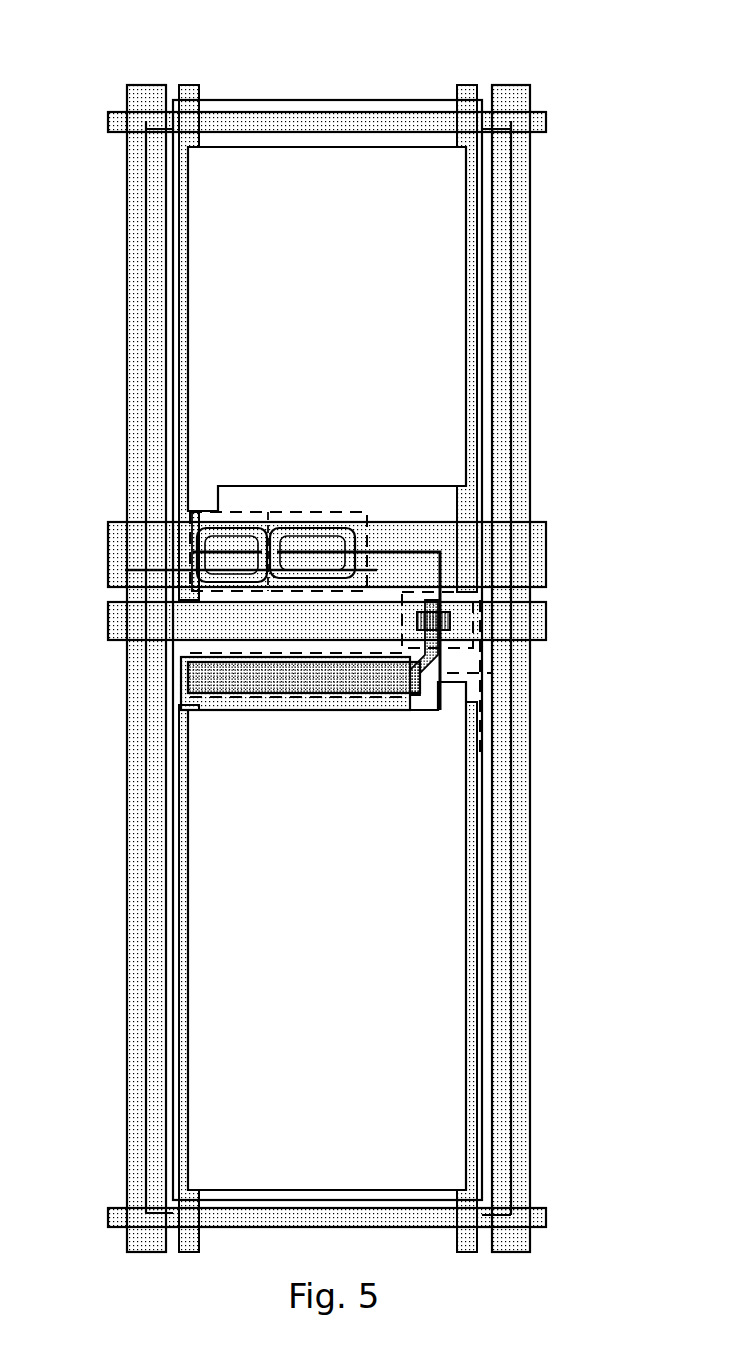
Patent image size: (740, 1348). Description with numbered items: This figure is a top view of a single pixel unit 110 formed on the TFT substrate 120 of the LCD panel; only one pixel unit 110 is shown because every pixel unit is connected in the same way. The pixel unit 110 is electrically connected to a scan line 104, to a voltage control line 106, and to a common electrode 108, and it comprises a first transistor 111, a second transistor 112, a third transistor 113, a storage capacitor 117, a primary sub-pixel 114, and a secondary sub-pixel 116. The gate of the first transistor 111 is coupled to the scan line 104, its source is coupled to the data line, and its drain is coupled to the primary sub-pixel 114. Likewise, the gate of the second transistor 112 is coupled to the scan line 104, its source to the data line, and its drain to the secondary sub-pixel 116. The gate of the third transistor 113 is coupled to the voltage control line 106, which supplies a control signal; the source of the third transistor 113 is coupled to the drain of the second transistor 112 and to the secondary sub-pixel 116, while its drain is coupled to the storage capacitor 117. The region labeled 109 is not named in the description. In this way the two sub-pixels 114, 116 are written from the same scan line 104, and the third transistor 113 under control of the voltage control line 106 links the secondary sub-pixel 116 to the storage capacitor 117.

The TFT substrate 120 is at (358, 29).
The scan line 104 is at (122, 540).
The voltage control line 106 is at (120, 634).
The common electrode 108 is at (190, 700).
The capacitor contact region 109 is at (222, 672).
The pixel unit 110 is at (176, 285).
The first transistor 111 is at (204, 504).
The second transistor 112 is at (372, 508).
The third transistor 113 is at (470, 625).
The primary sub-pixel 114 is at (385, 353).
The secondary sub-pixel 116 is at (385, 858).
The storage capacitor 117 is at (512, 672).